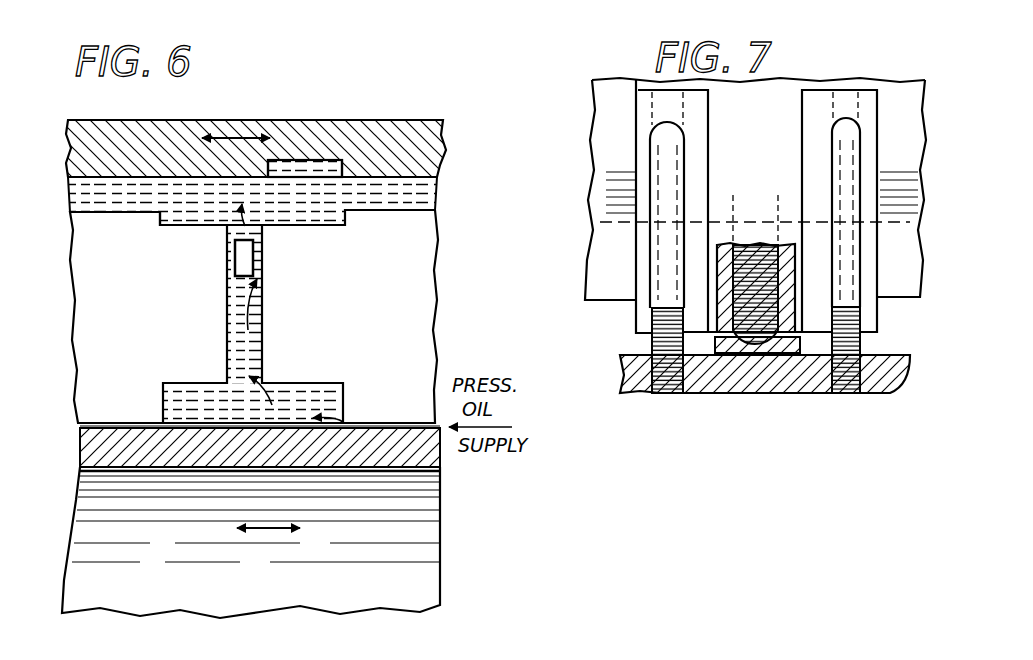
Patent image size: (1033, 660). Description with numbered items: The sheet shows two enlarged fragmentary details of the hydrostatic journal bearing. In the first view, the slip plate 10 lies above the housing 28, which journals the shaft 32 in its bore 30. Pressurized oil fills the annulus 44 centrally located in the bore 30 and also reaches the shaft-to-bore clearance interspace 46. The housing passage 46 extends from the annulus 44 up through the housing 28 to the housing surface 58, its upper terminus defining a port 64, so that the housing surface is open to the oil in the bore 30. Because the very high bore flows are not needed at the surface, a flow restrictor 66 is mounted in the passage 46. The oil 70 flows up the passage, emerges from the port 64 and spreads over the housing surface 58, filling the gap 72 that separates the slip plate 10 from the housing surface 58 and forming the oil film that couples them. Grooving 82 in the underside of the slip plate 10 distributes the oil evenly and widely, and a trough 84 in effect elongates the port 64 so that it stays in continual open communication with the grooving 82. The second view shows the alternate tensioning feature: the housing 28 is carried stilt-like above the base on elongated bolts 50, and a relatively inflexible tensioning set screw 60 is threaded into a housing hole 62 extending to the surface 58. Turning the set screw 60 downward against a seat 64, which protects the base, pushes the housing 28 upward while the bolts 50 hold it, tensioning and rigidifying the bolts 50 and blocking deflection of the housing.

In FIG. 6, the slip plate 10 is at (413, 120).
In FIG. 6, the housing 28 is at (430, 281).
In FIG. 7, the housing 28 is at (778, 95).
In FIG. 6, the bore 30 is at (88, 435).
In FIG. 6, the shaft 32 is at (438, 496).
In FIG. 7, the shaft 32 is at (608, 118).
In FIG. 6, the annulus 44 is at (318, 394).
In FIG. 6, the housing passage 46 is at (256, 346).
In FIG. 7, the elongated bolts 50 is at (835, 172).
In FIG. 6, the housing surface 58 is at (432, 213).
In FIG. 7, the tensioning set screw 60 is at (750, 321).
In FIG. 7, the housing hole 62 is at (765, 262).
In FIG. 6, the port 64 is at (224, 221).
In FIG. 7, the port 64 is at (790, 351).
In FIG. 6, the flow restrictor 66 is at (256, 262).
In FIG. 6, the oil 70 is at (128, 190).
In FIG. 6, the gap 72 is at (88, 190).
In FIG. 6, the grooving 82 is at (330, 168).
In FIG. 6, the trough 84 is at (185, 224).